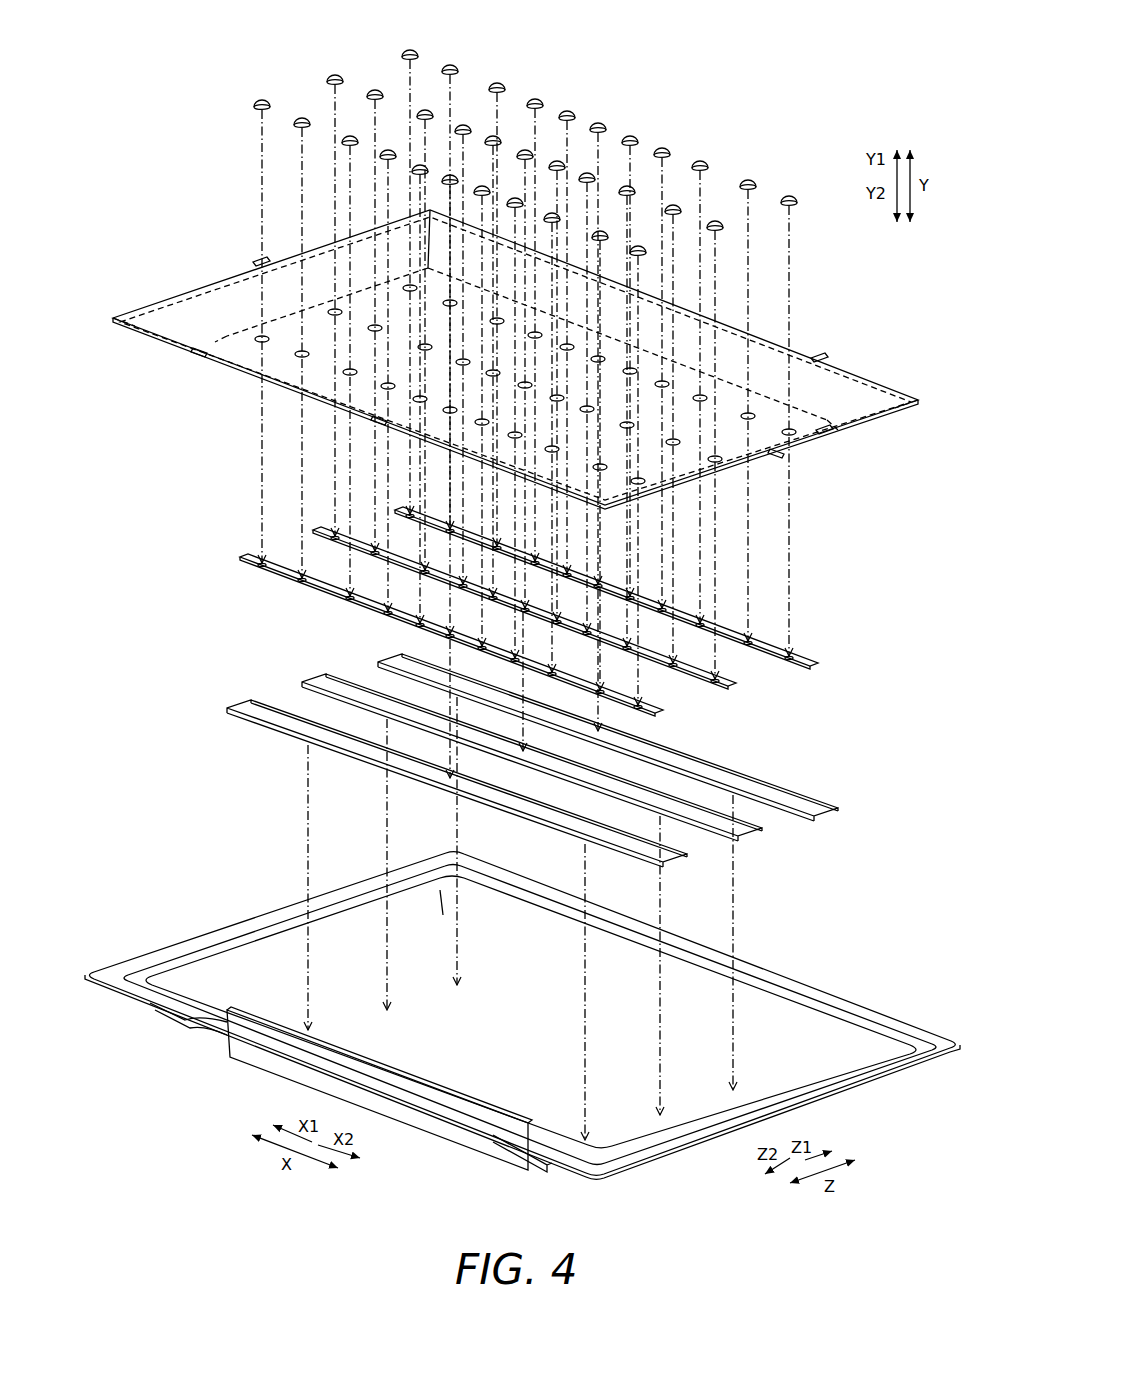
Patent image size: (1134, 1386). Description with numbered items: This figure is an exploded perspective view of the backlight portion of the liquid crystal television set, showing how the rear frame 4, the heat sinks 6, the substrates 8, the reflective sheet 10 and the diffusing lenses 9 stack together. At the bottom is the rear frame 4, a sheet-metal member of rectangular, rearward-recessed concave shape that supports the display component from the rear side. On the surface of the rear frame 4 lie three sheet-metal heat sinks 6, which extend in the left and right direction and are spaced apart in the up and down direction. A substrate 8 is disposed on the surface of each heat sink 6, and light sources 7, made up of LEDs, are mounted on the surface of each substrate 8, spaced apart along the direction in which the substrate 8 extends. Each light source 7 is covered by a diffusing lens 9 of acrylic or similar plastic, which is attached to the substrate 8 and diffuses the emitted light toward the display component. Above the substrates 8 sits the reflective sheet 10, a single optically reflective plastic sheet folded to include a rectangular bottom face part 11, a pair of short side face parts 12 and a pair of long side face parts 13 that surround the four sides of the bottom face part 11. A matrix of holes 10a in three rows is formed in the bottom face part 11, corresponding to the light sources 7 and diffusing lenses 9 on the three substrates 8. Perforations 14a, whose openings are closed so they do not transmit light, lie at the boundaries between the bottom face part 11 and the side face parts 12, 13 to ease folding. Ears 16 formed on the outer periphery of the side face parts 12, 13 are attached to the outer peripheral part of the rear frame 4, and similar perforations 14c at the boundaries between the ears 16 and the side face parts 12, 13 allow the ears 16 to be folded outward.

The rear frame 4 is at (883, 1023).
The heat sink 6 is at (809, 804).
The light source 7 is at (255, 565).
The substrate 8 is at (800, 653).
The diffusing lens 9 is at (412, 50).
The reflective sheet 10 is at (907, 390).
The hole 10a is at (245, 335).
The bottom face part 11 is at (318, 302).
The short side face part 12 is at (240, 302).
The long side face part 13 is at (800, 373).
The perforation 14a is at (227, 332).
The perforation 14c is at (165, 295).
The ear 16 is at (259, 255).